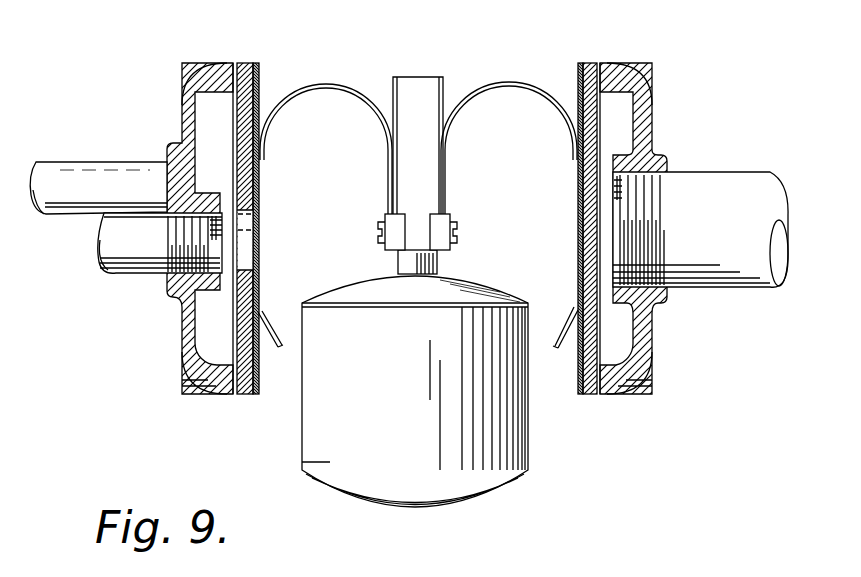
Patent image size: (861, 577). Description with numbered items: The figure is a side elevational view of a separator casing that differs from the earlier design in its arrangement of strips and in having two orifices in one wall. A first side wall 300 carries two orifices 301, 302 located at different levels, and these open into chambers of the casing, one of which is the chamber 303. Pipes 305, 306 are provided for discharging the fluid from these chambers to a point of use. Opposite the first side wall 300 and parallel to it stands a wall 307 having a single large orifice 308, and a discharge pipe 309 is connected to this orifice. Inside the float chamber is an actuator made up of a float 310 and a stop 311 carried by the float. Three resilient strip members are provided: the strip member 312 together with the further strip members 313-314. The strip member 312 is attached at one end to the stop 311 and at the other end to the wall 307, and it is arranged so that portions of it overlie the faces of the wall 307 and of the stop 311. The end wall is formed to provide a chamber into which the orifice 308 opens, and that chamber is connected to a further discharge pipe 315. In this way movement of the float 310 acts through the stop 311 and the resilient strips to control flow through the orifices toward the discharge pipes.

The first side wall 300 is at (251, 404).
The orifice 301 is at (247, 270).
The orifice 302 is at (262, 181).
The chamber 303 is at (207, 340).
The pipe 305 is at (137, 267).
The pipe 306 is at (100, 170).
The wall 307 is at (590, 396).
The orifice 308 is at (578, 207).
The discharge pipe 309 is at (737, 268).
The float 310 is at (395, 412).
The stop 311 is at (427, 188).
The resilient strip member 312 is at (509, 83).
The resilient strip members 313-314 is at (357, 43).
The discharge pipe 315 is at (617, 345).